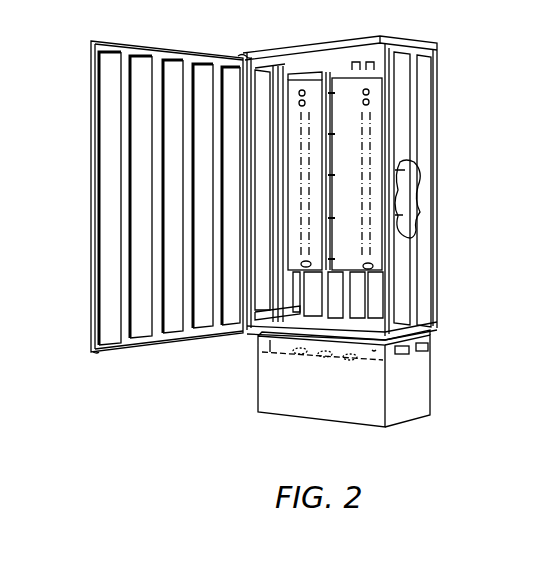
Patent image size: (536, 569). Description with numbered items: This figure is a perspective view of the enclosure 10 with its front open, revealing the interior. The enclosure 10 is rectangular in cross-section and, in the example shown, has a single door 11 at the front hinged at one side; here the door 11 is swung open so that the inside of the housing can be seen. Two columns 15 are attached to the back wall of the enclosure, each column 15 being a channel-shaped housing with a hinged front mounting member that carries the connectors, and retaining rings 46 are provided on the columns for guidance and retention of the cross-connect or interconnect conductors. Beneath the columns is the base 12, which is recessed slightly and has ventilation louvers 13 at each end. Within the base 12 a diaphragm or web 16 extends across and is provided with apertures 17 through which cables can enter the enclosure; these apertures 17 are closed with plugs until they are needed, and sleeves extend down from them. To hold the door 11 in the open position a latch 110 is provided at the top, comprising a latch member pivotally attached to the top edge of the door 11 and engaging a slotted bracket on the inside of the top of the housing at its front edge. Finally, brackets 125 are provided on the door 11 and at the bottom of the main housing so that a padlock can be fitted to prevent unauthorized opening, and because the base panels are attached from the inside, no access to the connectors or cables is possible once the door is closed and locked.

The enclosure 10 is at (444, 38).
The door 11 is at (91, 163).
The latch 110 is at (243, 56).
The base 12 is at (260, 393).
The ventilation louvers 13 is at (431, 352).
The column 15 is at (303, 117).
The diaphragm or web 16 is at (283, 360).
The apertures 17 is at (348, 360).
The retaining rings 46 is at (334, 134).
The brackets 125 is at (98, 356).